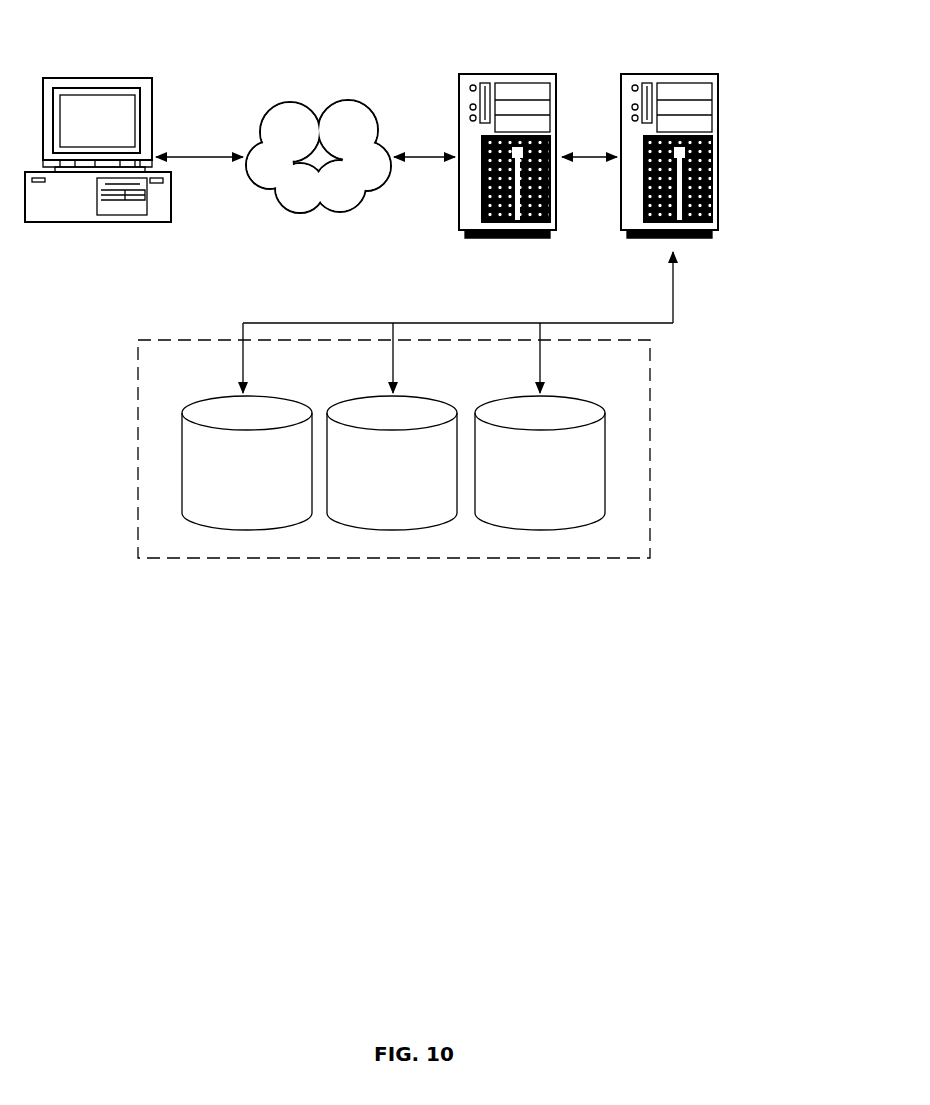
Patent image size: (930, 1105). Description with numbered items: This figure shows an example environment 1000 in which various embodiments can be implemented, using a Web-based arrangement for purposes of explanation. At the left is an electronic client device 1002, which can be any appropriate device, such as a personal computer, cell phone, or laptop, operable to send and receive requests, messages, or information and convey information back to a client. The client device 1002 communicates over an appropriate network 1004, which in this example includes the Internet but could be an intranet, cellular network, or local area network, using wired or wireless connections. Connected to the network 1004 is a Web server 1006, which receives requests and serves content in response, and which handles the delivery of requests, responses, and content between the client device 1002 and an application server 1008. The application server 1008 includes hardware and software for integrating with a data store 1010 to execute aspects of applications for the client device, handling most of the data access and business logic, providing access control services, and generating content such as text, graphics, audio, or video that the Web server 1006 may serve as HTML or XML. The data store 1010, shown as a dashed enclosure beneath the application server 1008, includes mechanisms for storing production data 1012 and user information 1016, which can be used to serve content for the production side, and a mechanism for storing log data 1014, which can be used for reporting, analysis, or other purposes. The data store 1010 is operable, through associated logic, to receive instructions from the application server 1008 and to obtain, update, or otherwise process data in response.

The environment 1000 is at (782, 327).
The electronic client device 1002 is at (118, 78).
The network 1004 is at (335, 103).
The Web server 1006 is at (455, 214).
The application server 1008 is at (618, 222).
The data store 1010 is at (170, 558).
The production data 1012 is at (262, 529).
The log data 1014 is at (413, 530).
The user information 1016 is at (560, 529).